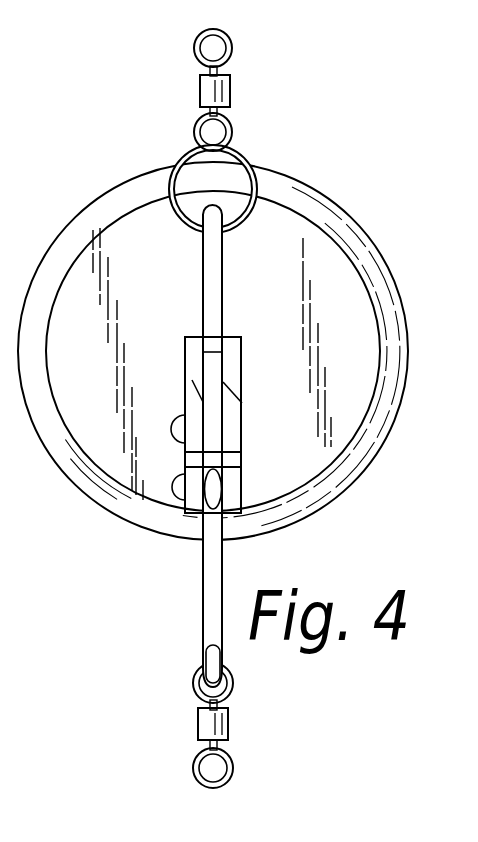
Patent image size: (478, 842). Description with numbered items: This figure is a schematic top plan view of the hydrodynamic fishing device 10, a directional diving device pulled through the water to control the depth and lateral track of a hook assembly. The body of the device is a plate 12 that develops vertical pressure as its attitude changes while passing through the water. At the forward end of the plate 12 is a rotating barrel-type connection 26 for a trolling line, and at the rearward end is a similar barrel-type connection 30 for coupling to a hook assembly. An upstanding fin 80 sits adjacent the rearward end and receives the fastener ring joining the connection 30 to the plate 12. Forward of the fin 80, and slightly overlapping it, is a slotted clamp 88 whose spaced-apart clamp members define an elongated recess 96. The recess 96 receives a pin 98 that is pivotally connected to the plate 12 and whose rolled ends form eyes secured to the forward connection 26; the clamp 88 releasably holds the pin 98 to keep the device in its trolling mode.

The hydrodynamic fishing device 10 is at (237, 314).
The plate 12 is at (335, 272).
The connection 26 is at (228, 730).
The connection 30 is at (200, 96).
The upstanding fin 80 is at (212, 294).
The slotted clamp 88 is at (232, 432).
The elongated recess 96 is at (213, 402).
The pin 98 is at (203, 603).